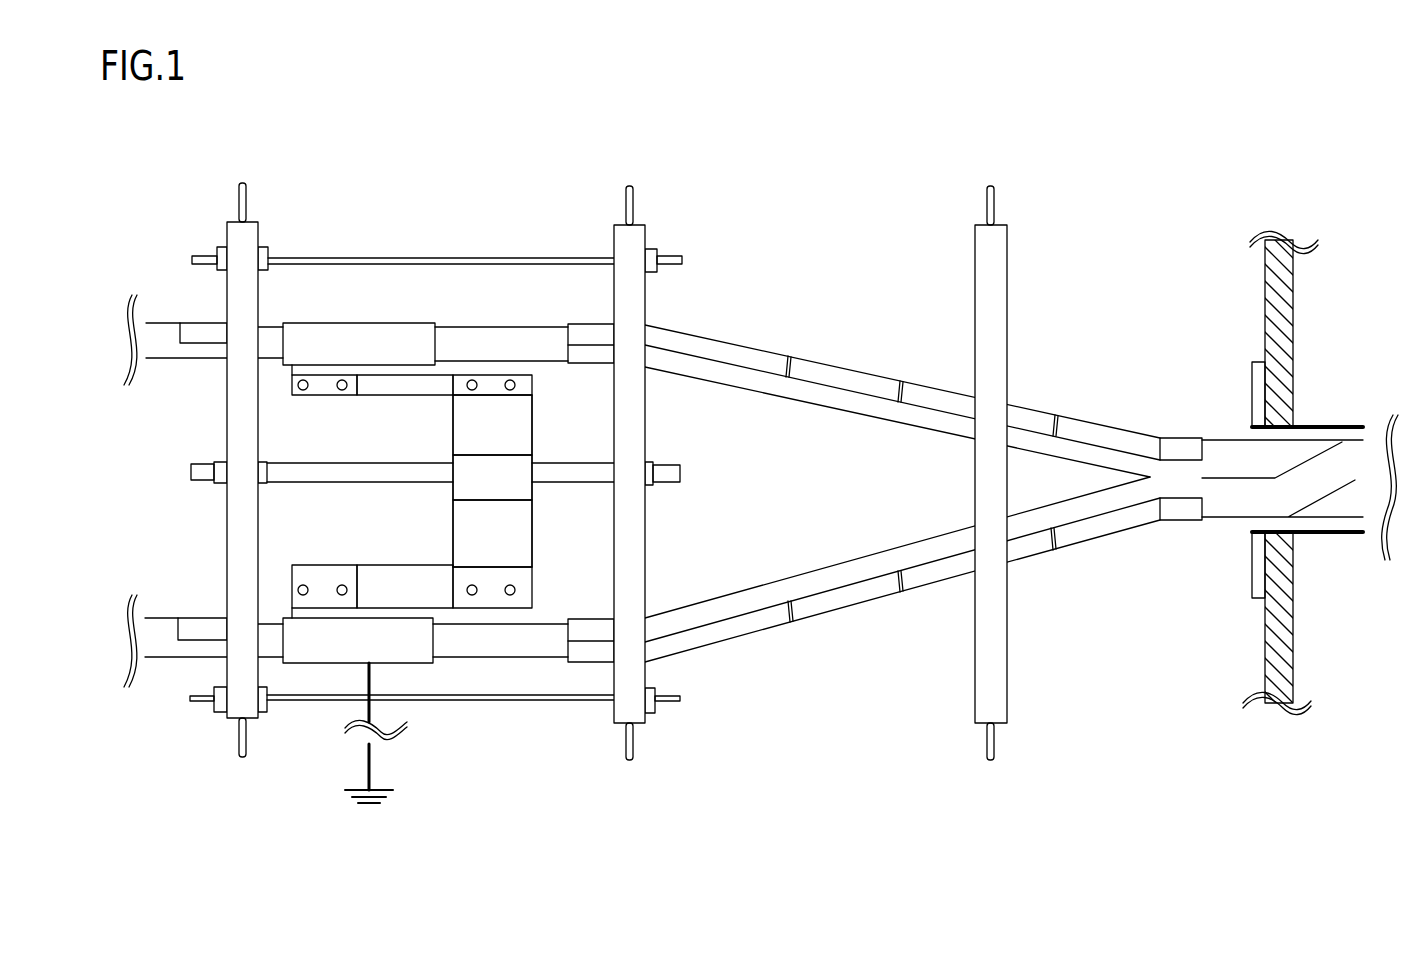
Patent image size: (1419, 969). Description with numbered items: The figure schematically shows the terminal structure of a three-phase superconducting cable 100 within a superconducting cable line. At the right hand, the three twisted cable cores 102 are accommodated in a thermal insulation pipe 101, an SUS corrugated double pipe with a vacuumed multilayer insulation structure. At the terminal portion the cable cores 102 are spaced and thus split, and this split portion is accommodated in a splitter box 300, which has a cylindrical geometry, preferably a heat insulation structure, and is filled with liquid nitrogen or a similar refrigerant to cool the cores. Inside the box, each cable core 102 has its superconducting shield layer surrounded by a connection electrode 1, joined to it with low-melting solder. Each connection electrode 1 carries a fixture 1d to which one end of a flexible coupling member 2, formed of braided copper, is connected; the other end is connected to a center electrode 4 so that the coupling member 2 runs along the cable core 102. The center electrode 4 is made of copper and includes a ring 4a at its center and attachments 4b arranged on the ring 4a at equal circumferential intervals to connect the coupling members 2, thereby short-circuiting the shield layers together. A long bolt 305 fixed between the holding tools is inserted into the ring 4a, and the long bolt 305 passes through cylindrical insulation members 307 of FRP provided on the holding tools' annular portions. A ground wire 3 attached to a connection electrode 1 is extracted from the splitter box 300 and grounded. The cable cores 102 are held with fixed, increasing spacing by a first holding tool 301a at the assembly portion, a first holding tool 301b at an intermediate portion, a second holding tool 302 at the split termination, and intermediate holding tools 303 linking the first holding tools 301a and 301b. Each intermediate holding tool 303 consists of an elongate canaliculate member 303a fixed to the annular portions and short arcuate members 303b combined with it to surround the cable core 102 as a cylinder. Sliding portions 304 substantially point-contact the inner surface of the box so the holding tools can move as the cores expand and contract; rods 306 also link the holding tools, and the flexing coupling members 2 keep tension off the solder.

The connection electrode 1 is at (365, 320).
The fixture 1d is at (305, 383).
The coupling member 2 is at (380, 380).
The ground wire 3 is at (372, 765).
The center electrode 4 is at (571, 491).
The ring 4a is at (525, 488).
The attachment 4b is at (525, 430).
The superconducting cable 100 is at (1200, 540).
The thermal insulation pipe 101 is at (1315, 425).
The cable core 102 is at (483, 338).
The splitter box 300 is at (1293, 325).
The first holding tool 301a is at (1008, 385).
The first holding tool 301b is at (645, 578).
The second holding tool 302 is at (227, 405).
The intermediate holding tool 303 is at (902, 494).
The canaliculate member 303a is at (805, 388).
The arcuate member 303b is at (740, 340).
The sliding portion 304 is at (247, 200).
The long bolt 305 is at (668, 470).
The connecting rod 306 is at (472, 262).
The cylindrical insulation member 307 is at (655, 485).